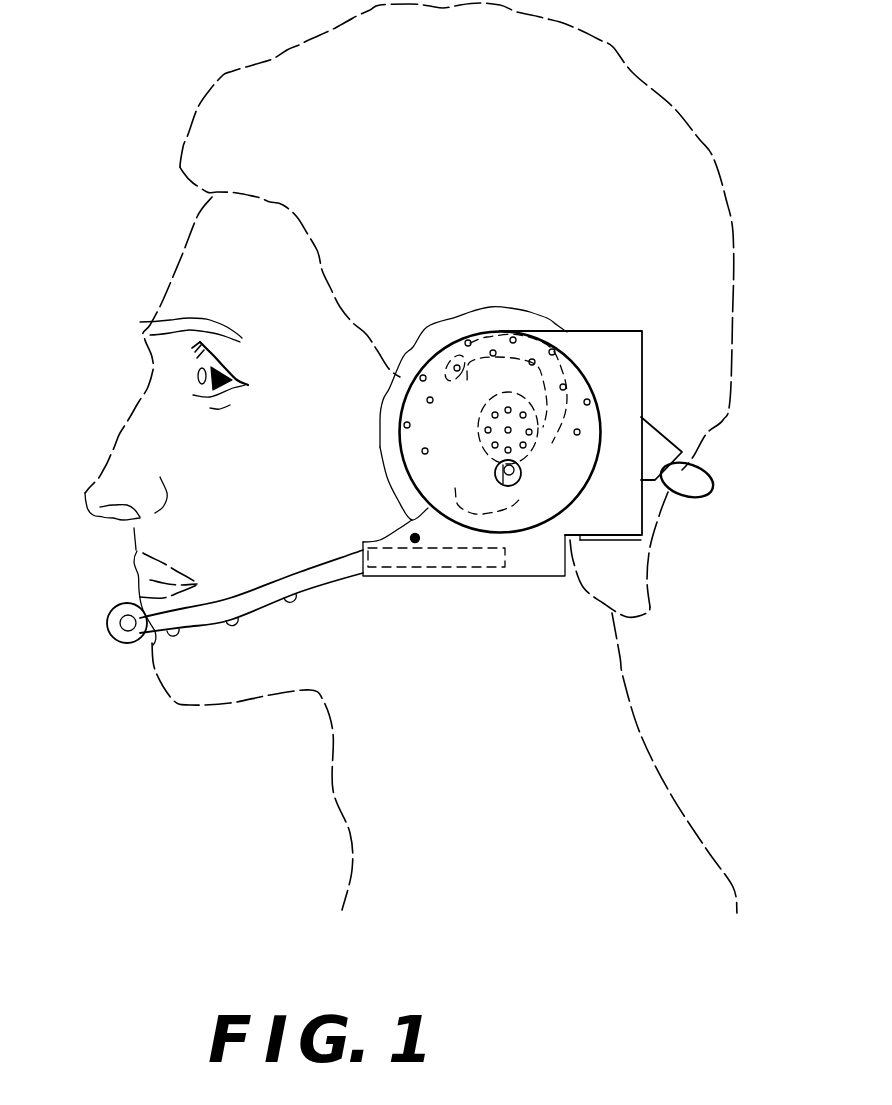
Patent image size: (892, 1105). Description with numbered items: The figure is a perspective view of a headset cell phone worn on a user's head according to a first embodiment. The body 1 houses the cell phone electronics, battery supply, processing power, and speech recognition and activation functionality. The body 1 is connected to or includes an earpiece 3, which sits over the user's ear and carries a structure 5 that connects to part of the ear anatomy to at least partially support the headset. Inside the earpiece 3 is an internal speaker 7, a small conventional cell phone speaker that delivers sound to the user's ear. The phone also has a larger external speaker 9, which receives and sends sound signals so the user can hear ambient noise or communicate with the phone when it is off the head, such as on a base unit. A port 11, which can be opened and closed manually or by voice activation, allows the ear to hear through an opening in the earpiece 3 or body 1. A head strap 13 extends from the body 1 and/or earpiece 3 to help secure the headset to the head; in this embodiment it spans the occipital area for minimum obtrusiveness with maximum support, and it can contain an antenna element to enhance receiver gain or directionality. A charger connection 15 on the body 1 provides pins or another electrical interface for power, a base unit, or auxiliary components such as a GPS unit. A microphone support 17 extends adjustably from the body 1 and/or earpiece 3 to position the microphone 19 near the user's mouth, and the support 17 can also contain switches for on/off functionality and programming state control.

The body 1 is at (625, 340).
The earpiece 3 is at (477, 330).
The structure for connection to part of the ear anatomy 5 is at (508, 323).
The internal speaker 7 is at (530, 428).
The external speaker 9 is at (424, 452).
The port 11 is at (508, 486).
The head strap 13 is at (660, 487).
The charger connection 15 is at (618, 538).
The microphone support 17 is at (415, 538).
The microphone 19 is at (110, 620).